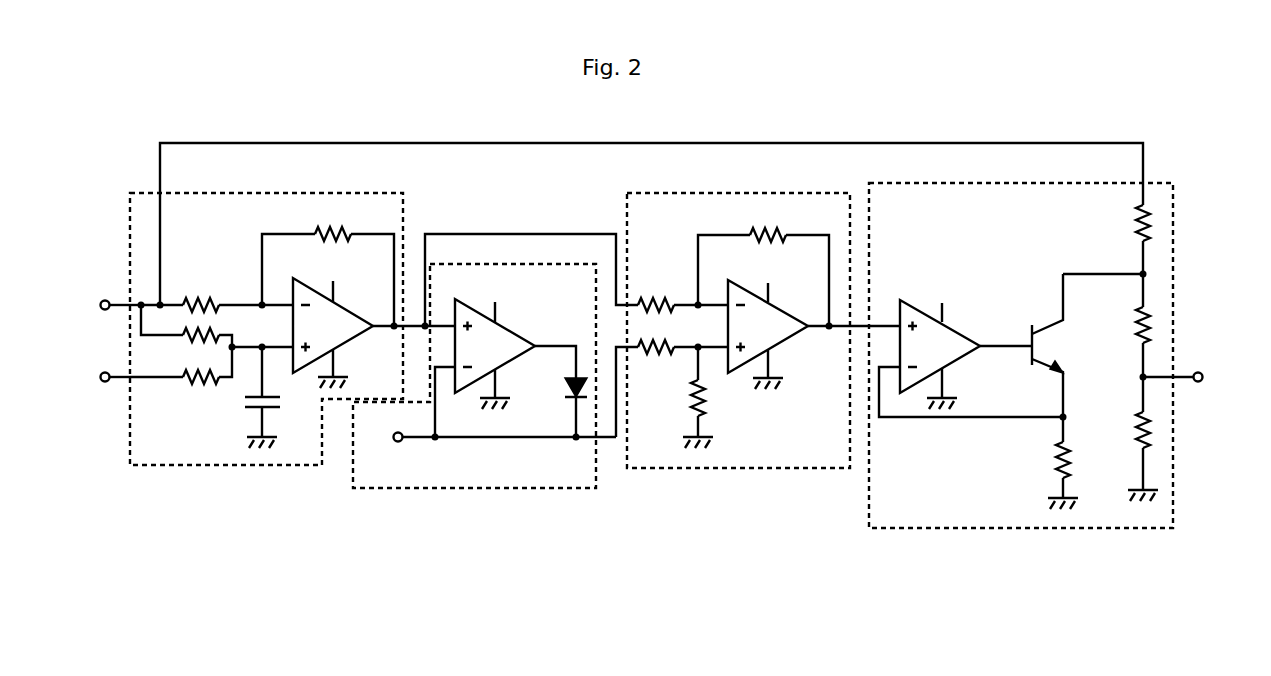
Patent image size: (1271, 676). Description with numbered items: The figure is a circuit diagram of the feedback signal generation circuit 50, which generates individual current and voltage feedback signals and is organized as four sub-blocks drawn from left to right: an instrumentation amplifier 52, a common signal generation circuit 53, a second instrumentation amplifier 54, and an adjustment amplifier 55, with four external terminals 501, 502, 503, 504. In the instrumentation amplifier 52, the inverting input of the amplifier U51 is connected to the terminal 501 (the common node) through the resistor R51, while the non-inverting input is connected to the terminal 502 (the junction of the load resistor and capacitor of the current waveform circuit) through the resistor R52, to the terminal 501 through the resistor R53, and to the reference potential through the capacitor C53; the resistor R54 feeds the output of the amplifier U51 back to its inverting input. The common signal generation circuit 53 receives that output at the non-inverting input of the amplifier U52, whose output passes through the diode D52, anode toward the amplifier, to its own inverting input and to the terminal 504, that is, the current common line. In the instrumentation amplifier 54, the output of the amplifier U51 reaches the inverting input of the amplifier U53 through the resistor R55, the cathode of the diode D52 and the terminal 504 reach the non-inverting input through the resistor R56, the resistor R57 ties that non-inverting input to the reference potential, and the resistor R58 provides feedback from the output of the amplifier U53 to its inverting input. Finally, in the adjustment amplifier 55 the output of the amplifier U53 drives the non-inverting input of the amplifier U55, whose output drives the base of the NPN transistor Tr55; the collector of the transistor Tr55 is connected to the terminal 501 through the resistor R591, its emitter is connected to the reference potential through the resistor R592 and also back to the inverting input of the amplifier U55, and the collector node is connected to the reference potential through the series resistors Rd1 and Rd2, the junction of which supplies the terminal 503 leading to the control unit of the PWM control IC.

The feedback signal generation circuit 50 is at (1110, 113).
The instrumentation amplifier 52 is at (388, 193).
The common signal generation circuit 53 is at (572, 489).
The instrumentation amplifier 54 is at (826, 193).
The adjustment amplifier 55 is at (912, 529).
The terminal 501 is at (105, 300).
The terminal 502 is at (105, 382).
The terminal 503 is at (1198, 382).
The terminal 504 is at (398, 442).
The resistor R51 is at (201, 291).
The resistor R52 is at (181, 380).
The resistor R53 is at (217, 334).
The resistor R54 is at (328, 262).
The capacitor C53 is at (250, 397).
The amplifier U51 is at (336, 322).
The amplifier U52 is at (503, 343).
The diode D52 is at (558, 406).
The resistor R55 is at (683, 291).
The resistor R56 is at (683, 362).
The resistor R57 is at (715, 397).
The resistor R58 is at (763, 263).
The amplifier U53 is at (774, 323).
The amplifier U55 is at (946, 343).
The transistor Tr55 is at (1032, 345).
The resistor R591 is at (1115, 239).
The resistor R592 is at (1039, 463).
The resistor Rd1 is at (1123, 325).
The resistor Rd2 is at (1127, 439).